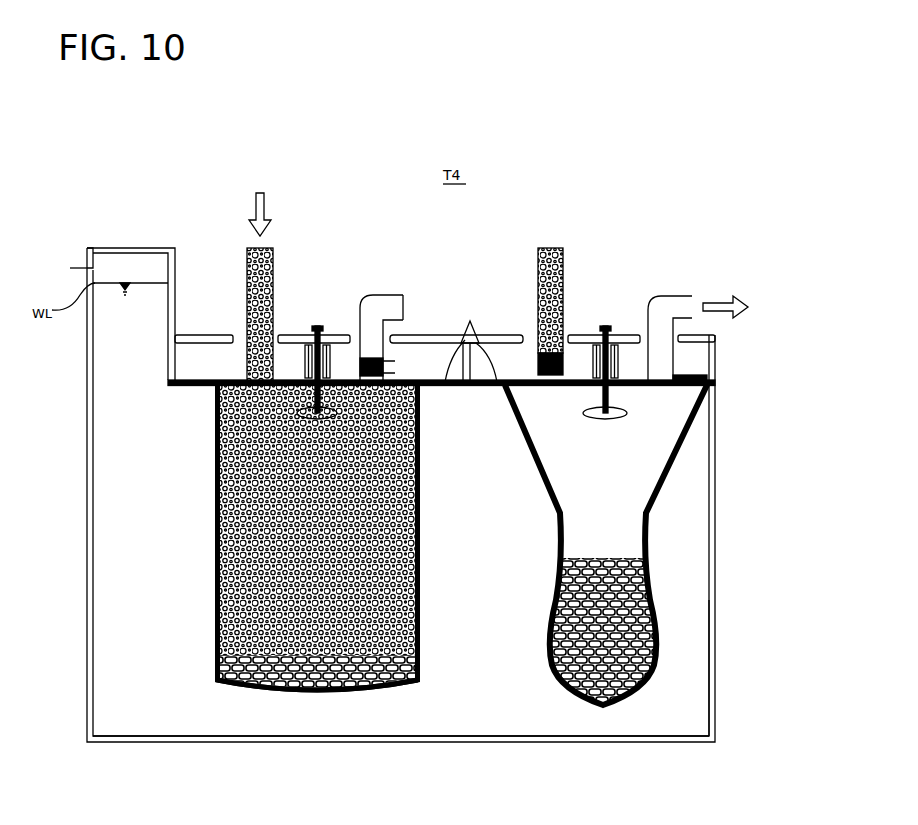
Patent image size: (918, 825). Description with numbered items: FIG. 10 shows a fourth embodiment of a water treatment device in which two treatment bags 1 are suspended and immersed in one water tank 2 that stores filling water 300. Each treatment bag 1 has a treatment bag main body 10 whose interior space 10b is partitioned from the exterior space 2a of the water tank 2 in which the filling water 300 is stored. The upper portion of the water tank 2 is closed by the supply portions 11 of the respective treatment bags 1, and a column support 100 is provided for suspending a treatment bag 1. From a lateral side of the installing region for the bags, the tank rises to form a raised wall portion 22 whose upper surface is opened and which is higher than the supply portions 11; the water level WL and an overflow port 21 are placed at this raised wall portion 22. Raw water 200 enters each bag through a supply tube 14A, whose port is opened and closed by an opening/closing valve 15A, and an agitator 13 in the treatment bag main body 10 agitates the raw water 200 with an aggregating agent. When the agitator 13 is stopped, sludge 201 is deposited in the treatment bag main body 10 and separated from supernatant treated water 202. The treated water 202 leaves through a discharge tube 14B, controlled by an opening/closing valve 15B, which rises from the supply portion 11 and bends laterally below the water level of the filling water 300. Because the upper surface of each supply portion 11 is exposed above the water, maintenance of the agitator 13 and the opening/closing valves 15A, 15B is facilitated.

The treatment bag 1 is at (529, 460).
The water tank 2 is at (87, 506).
The exterior space 2a is at (455, 742).
The treatment bag main body 10 is at (560, 508).
The interior space 10b is at (575, 540).
The supply portion 11 is at (471, 342).
The agitator 13 is at (347, 336).
The supply tube 14A is at (275, 262).
The discharge tube 14B is at (372, 296).
The opening/closing valve 15A is at (252, 338).
The opening/closing valve 15B is at (393, 358).
The overflow port 21 is at (87, 262).
The raised wall portion 22 is at (175, 298).
The column support 100 is at (432, 335).
The raw water 200 is at (215, 604).
The sludge 201 is at (548, 662).
The treated water 202 is at (650, 478).
The filling water 300 is at (688, 706).